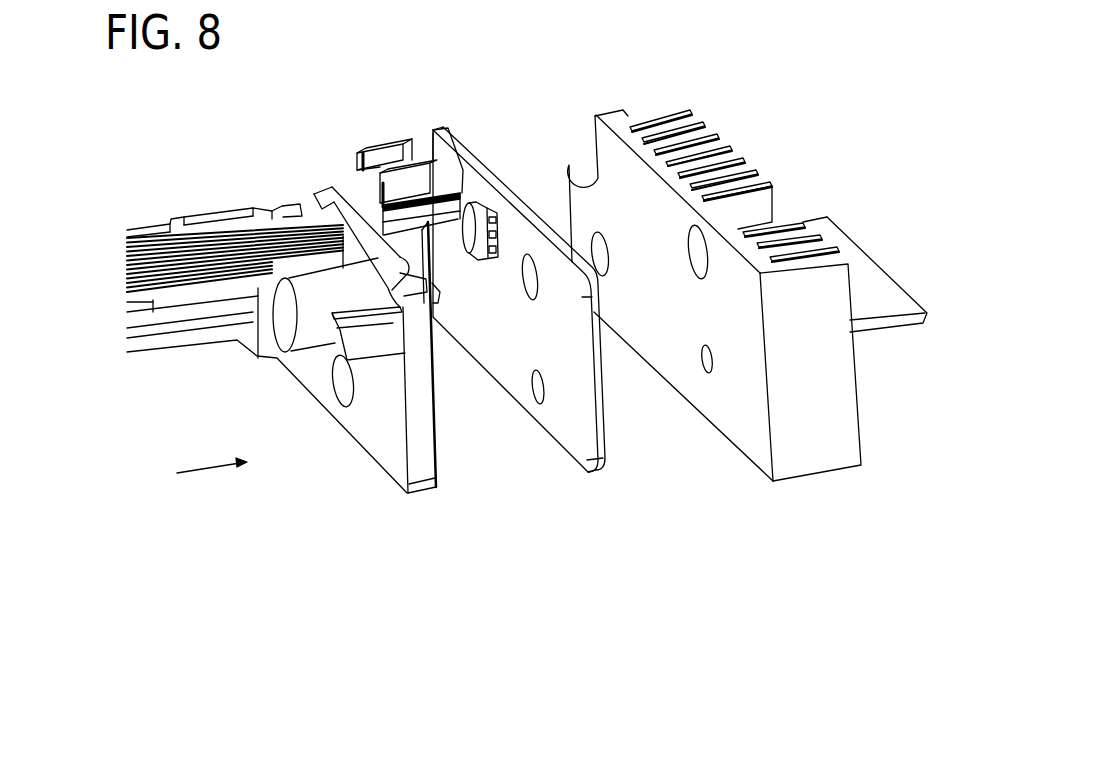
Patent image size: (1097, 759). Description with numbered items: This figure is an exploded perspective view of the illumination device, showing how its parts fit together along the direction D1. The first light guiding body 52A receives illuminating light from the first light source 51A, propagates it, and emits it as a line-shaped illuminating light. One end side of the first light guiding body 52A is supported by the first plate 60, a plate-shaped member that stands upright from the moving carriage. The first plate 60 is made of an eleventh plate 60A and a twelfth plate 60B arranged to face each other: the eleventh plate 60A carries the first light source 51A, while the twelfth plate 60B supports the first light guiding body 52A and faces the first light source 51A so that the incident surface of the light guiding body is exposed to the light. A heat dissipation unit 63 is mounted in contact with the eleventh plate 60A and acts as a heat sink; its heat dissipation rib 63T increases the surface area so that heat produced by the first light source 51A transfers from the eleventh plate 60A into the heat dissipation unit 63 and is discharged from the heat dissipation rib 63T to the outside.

The first light guiding body 52A is at (220, 247).
The first light source 51A is at (475, 200).
The first plate 60 is at (552, 595).
The eleventh plate 60A is at (565, 438).
The twelfth plate 60B is at (393, 462).
The heat dissipation unit 63 is at (747, 317).
The heat dissipation rib 63T is at (688, 108).
The direction D1 is at (214, 471).